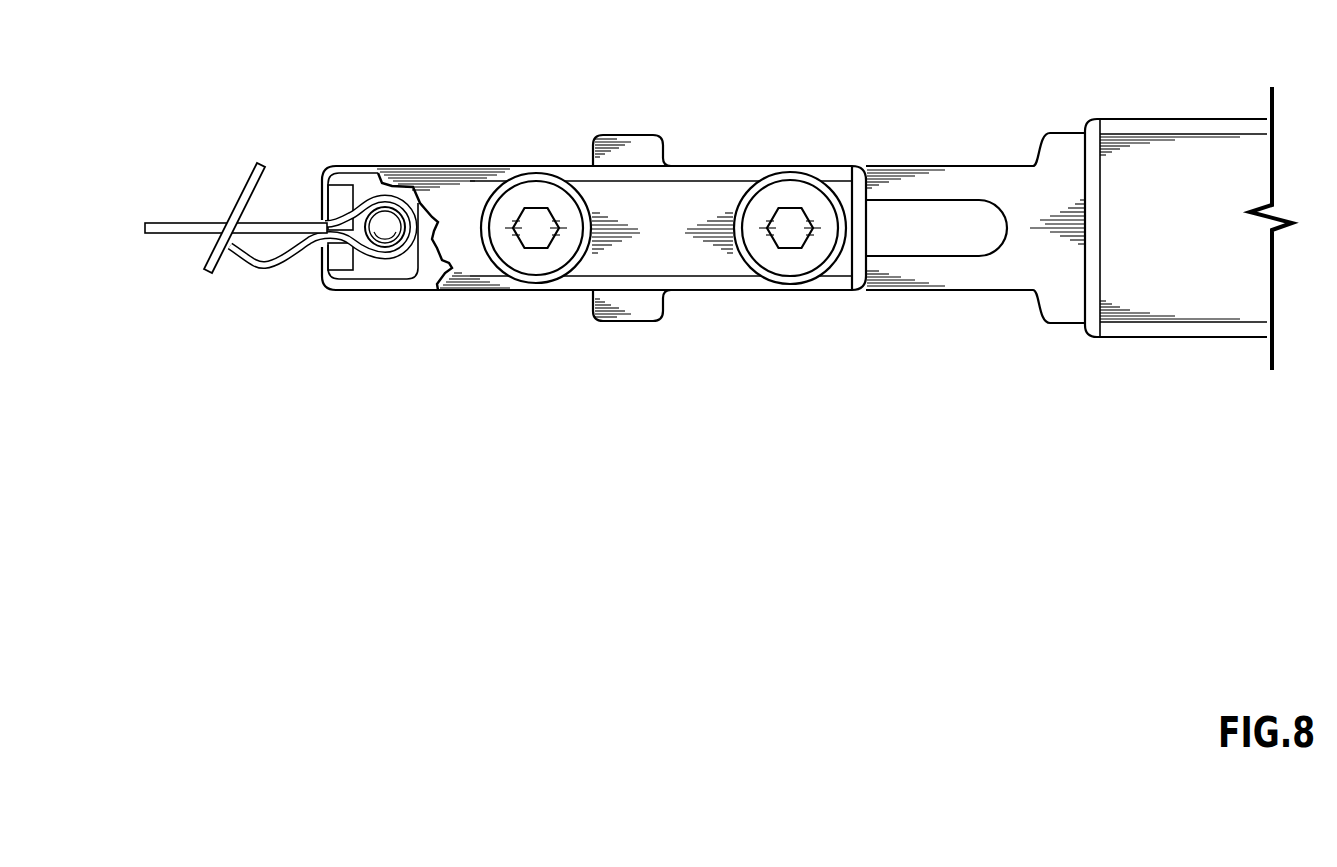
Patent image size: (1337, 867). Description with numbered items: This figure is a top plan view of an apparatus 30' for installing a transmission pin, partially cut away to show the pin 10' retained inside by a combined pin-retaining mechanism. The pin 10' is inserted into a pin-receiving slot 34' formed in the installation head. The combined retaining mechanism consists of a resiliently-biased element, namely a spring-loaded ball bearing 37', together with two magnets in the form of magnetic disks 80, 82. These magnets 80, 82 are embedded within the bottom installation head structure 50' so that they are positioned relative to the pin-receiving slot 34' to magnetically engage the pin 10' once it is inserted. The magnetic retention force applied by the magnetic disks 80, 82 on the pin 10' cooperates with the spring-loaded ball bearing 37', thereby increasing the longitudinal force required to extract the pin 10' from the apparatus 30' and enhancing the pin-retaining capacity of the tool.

The apparatus 30' is at (814, 190).
The pin 10' is at (236, 203).
The magnetic disk 80 is at (341, 196).
The magnetic disk 82 is at (343, 257).
The spring-loaded ball bearing 37' is at (443, 160).
The pin-receiving slot 34' is at (321, 290).
The bottom installation head structure 50' is at (423, 272).